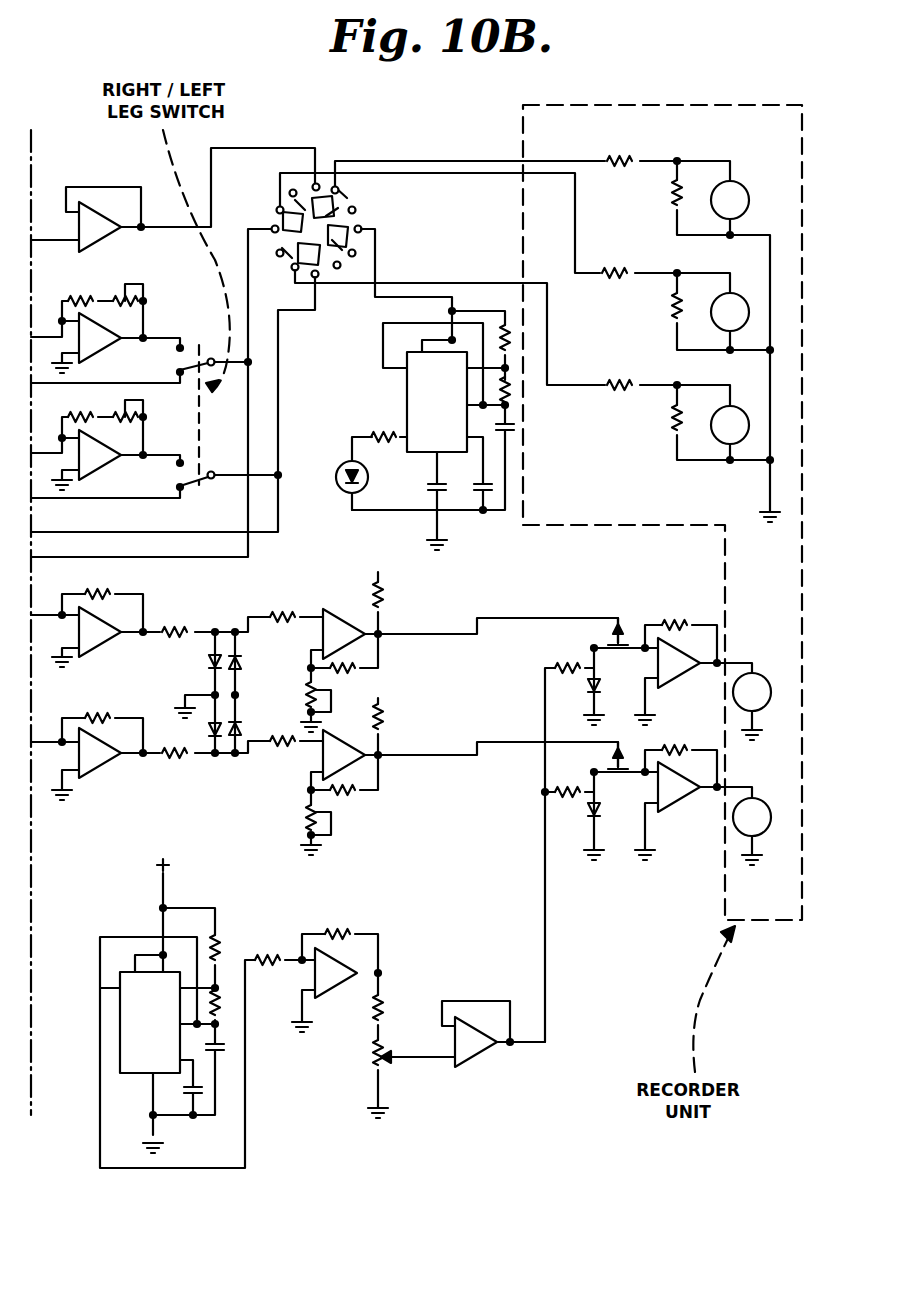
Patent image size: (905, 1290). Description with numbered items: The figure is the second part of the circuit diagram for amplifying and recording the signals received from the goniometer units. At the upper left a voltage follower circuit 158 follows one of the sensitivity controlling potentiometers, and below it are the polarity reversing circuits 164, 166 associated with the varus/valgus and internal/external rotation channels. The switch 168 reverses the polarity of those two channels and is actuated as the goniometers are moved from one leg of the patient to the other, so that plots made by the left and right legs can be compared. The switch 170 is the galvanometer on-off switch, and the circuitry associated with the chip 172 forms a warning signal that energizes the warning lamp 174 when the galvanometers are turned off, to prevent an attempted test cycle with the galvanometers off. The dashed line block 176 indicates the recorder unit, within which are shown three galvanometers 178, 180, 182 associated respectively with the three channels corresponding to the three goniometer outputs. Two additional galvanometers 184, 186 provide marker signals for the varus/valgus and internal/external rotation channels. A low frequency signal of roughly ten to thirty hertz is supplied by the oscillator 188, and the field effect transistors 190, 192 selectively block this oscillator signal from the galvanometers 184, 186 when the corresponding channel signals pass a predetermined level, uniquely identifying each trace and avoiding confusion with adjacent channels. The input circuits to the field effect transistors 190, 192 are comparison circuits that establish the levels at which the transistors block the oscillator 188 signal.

The voltage follower circuit 158 is at (92, 212).
The polarity reversing circuit 164 is at (97, 333).
The polarity reversing circuit 166 is at (96, 450).
The switch 168 is at (203, 413).
The galvanometer on-off switch 170 is at (352, 221).
The chip 172 is at (418, 397).
The warning lamp 174 is at (340, 494).
The recorder unit 176 is at (665, 105).
The galvanometer 178 is at (745, 190).
The galvanometer 180 is at (757, 256).
The galvanometer 182 is at (725, 428).
The galvanometer 184 is at (760, 690).
The galvanometer 186 is at (763, 826).
The oscillator 188 is at (322, 1013).
The field effect transistor 190 is at (628, 636).
The field effect transistor 192 is at (628, 762).